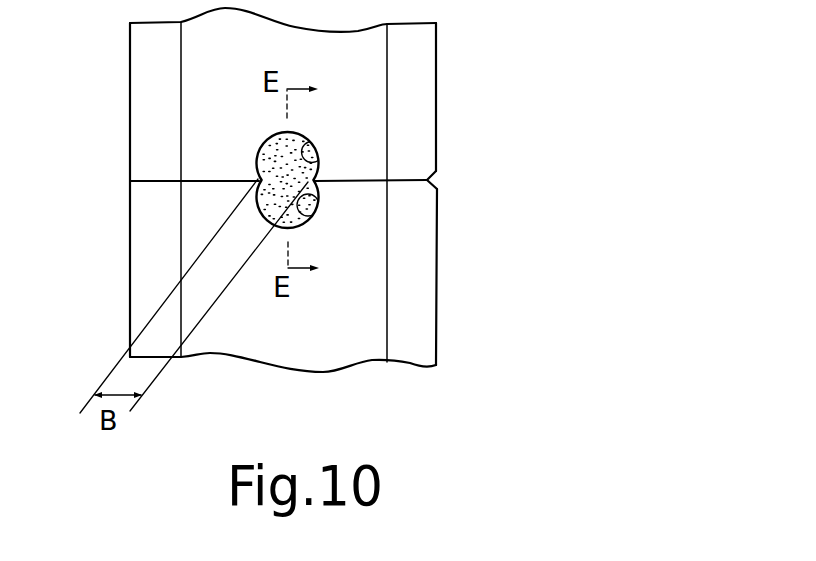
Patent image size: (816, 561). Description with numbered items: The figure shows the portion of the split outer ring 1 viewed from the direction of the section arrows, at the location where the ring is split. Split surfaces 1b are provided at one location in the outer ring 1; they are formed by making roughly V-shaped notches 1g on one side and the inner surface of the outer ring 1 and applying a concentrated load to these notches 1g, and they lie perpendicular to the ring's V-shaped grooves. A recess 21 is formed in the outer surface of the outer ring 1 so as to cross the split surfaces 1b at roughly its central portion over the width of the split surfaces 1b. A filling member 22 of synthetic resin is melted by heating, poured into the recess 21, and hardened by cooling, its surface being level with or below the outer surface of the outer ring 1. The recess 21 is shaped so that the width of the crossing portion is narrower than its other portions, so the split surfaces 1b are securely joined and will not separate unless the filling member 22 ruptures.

The outer ring 1 is at (443, 332).
The split surfaces 1b is at (195, 181).
The V-shaped notches 1g is at (434, 178).
The recess 21 is at (317, 192).
The filling member 22 is at (275, 152).